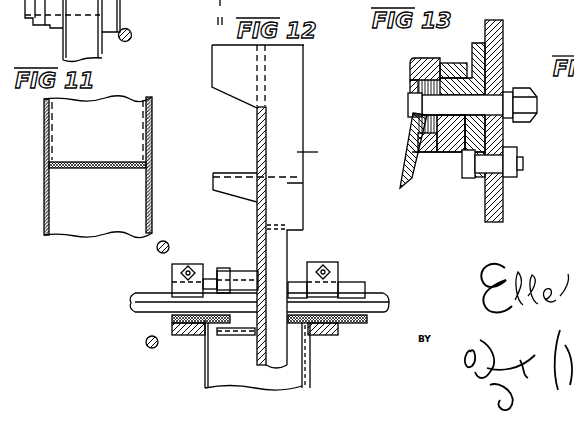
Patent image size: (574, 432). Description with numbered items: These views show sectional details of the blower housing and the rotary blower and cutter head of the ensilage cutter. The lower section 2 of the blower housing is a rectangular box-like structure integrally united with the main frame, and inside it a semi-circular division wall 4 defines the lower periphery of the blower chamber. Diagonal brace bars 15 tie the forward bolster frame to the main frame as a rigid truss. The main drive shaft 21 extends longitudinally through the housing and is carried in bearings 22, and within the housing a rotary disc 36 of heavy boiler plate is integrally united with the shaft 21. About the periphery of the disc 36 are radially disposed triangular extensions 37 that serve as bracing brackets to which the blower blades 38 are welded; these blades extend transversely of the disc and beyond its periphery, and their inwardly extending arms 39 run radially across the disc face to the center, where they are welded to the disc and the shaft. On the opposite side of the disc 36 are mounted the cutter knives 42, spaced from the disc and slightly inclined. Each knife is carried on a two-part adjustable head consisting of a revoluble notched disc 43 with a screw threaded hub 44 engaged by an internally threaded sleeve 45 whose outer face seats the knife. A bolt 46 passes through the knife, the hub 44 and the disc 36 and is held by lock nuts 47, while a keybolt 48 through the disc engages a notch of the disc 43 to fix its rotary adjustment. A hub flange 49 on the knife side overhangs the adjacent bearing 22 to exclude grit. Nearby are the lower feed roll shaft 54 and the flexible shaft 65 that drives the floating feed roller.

In FIG. 11, the lower section of the blower housing 2 is at (44, 152).
In FIG. 12, the lower section of the blower housing 2 is at (205, 358).
In FIG. 11, the semi-circular division wall 4 is at (91, 162).
In FIG. 11, the diagonal brace bar 15 is at (131, 33).
In FIG. 12, the main drive shaft 21 is at (141, 297).
In FIG. 12, the bearing 22 is at (170, 320).
In FIG. 12, the rotary disc 36 is at (257, 147).
In FIG. 13, the rotary disc 36 is at (503, 32).
In FIG. 12, the triangular extension 37 is at (268, 78).
In FIG. 12, the blower blade 38 is at (223, 203).
In FIG. 12, the inwardly extending arm 39 is at (275, 213).
In FIG. 13, the cutter knife 42 is at (405, 147).
In FIG. 13, the revoluble notched disc 43 is at (478, 60).
In FIG. 13, the screw threaded hub 44 is at (452, 77).
In FIG. 13, the internally screw threaded sleeve 45 is at (448, 78).
In FIG. 13, the bolt 46 is at (432, 105).
In FIG. 13, the lock nut 47 is at (537, 82).
In FIG. 13, the keybolt 48 is at (483, 168).
In FIG. 12, the hub flange 49 is at (226, 270).
In FIG. 12, the transverse shaft 54 is at (147, 347).
In FIG. 12, the flexible shaft 65 is at (166, 241).